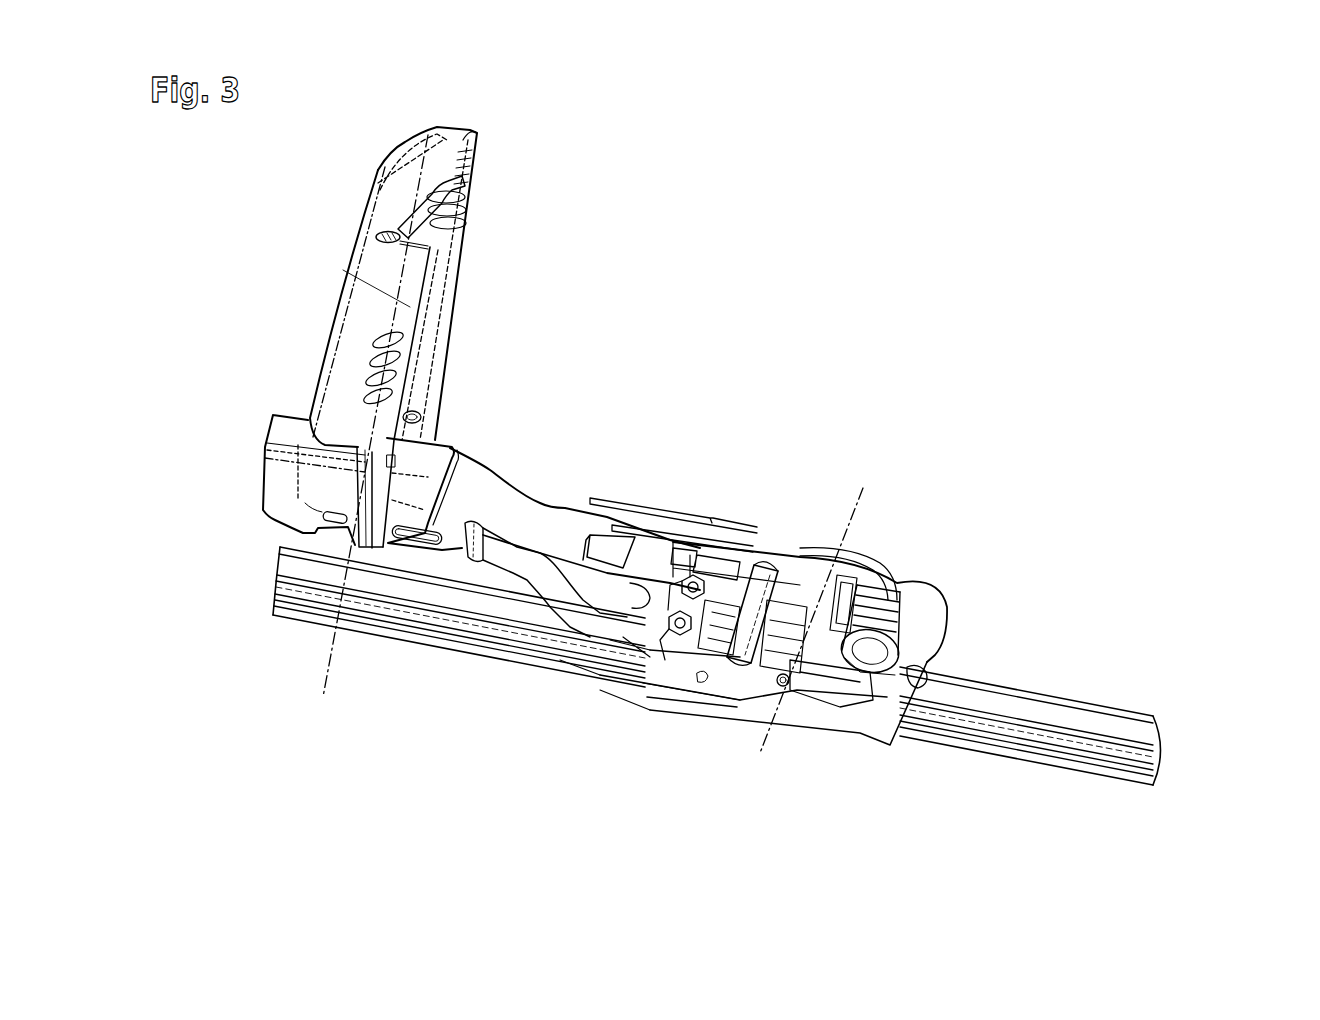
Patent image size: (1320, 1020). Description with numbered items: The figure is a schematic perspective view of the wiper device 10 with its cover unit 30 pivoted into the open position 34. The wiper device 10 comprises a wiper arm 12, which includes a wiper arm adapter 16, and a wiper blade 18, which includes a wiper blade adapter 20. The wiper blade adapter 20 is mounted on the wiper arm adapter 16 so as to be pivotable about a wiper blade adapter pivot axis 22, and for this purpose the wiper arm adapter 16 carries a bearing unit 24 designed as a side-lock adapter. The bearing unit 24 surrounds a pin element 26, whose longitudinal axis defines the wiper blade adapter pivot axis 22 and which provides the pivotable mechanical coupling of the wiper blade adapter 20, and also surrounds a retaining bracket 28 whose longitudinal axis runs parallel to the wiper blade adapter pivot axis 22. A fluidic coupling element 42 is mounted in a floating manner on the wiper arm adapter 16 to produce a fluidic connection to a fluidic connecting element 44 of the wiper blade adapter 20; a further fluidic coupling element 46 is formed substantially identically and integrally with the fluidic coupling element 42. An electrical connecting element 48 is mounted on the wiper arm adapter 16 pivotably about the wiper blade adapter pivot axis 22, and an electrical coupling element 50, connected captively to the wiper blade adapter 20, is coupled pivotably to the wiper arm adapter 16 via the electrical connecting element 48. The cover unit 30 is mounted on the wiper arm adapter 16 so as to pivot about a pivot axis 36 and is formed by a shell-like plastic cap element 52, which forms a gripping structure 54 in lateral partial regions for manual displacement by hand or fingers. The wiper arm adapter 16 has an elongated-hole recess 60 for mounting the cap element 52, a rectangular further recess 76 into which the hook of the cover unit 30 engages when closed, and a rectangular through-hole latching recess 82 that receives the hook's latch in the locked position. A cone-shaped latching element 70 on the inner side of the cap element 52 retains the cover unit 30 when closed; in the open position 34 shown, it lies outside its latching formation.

The wiper device 10 is at (975, 345).
The wiper arm 12 is at (250, 462).
The wiper arm adapter 16 is at (510, 493).
The wiper blade 18 is at (1175, 760).
The wiper blade adapter 20 is at (750, 723).
The wiper blade adapter pivot axis 22 is at (858, 490).
The bearing unit 24 is at (793, 567).
The pin element 26 is at (807, 707).
The retaining bracket 28 is at (727, 633).
The cover unit 30 is at (465, 290).
The open position 34 is at (527, 137).
The pivot axis 36 is at (327, 690).
The fluidic coupling element 42 is at (663, 670).
The fluidic connecting element 44 is at (683, 643).
The further fluidic coupling element 46 is at (650, 640).
The electrical connecting element 48 is at (940, 637).
The electrical coupling element 50 is at (923, 672).
The cap element 52 is at (363, 305).
The gripping structure 54 is at (477, 204).
The recess 60 is at (333, 538).
The latching element 70 is at (421, 415).
The further recess 76 is at (723, 547).
The latching recess 82 is at (670, 547).